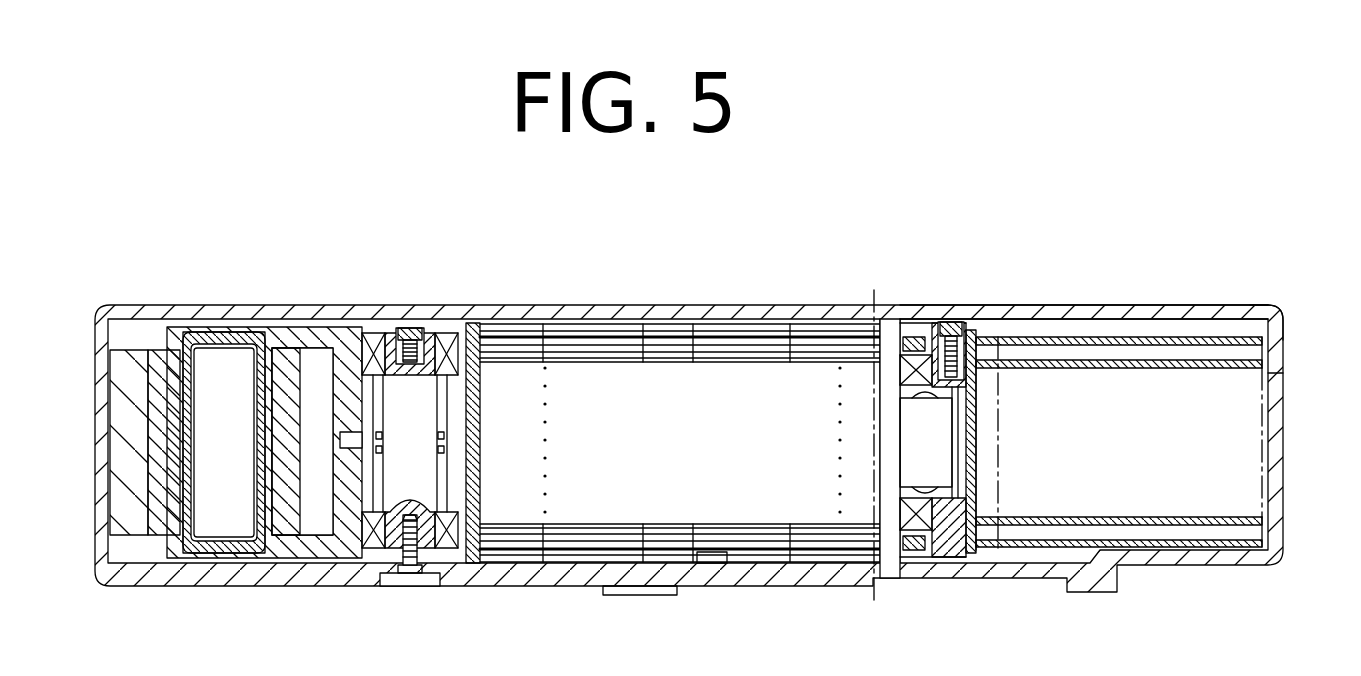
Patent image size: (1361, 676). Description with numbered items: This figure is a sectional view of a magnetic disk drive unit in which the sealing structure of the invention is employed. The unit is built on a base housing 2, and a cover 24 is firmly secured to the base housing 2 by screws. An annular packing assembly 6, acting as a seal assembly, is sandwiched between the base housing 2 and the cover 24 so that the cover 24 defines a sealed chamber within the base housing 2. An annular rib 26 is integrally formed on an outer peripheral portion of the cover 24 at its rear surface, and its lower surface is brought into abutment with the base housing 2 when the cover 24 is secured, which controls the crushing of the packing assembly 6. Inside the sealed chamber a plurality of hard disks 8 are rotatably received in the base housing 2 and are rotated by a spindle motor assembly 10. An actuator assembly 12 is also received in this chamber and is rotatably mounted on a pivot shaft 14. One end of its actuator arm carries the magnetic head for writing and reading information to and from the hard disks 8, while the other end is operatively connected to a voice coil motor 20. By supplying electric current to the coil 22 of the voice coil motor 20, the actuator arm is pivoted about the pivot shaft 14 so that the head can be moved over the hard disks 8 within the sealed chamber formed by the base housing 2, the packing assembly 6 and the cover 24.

The base housing 2 is at (1283, 508).
The annular packing assembly 6 is at (1278, 373).
The hard disks 8 is at (1163, 362).
The spindle motor assembly 10 is at (932, 320).
The actuator assembly 12 is at (373, 565).
The pivot shaft 14 is at (418, 472).
The voice coil motor 20 is at (287, 335).
The coil 22 is at (217, 332).
The cover 24 is at (1067, 305).
The annular rib 26 is at (1283, 318).